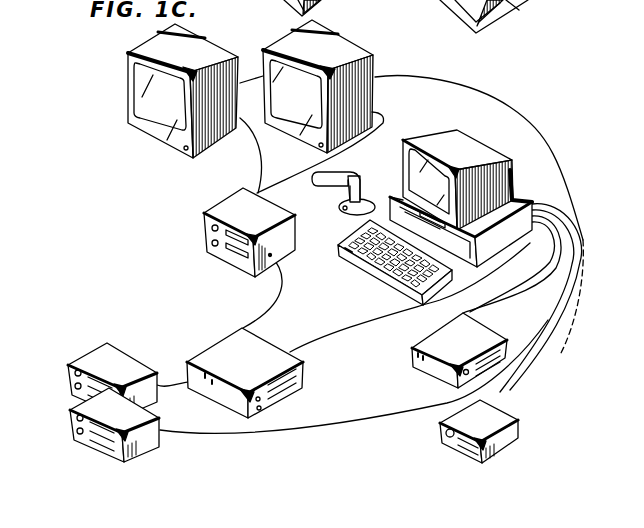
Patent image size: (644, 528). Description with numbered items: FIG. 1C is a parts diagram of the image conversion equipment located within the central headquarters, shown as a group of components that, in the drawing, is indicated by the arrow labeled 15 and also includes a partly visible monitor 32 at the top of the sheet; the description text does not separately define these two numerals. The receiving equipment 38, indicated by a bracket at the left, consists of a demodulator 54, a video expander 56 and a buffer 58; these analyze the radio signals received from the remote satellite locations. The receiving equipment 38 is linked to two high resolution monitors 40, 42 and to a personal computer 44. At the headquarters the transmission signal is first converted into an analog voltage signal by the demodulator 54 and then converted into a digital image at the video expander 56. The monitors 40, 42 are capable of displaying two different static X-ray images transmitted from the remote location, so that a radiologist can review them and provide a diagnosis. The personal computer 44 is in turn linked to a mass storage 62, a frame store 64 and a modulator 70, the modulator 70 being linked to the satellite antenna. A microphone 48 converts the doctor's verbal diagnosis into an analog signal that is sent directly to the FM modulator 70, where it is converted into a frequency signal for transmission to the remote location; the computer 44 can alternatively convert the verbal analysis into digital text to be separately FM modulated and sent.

The computer system 15 is at (106, 175).
The display monitor 32 is at (521, 0).
The receiving equipment 38 is at (193, 207).
The monitor 40 is at (207, 50).
The monitor 42 is at (357, 50).
The personal computer 44 is at (425, 137).
The microphone 48 is at (358, 168).
The demodulator 54 is at (118, 350).
The video expander 56 is at (227, 352).
The buffer 58 is at (232, 212).
The mass storage 62 is at (438, 338).
The frame store 64 is at (440, 427).
The modulator 70 is at (157, 420).